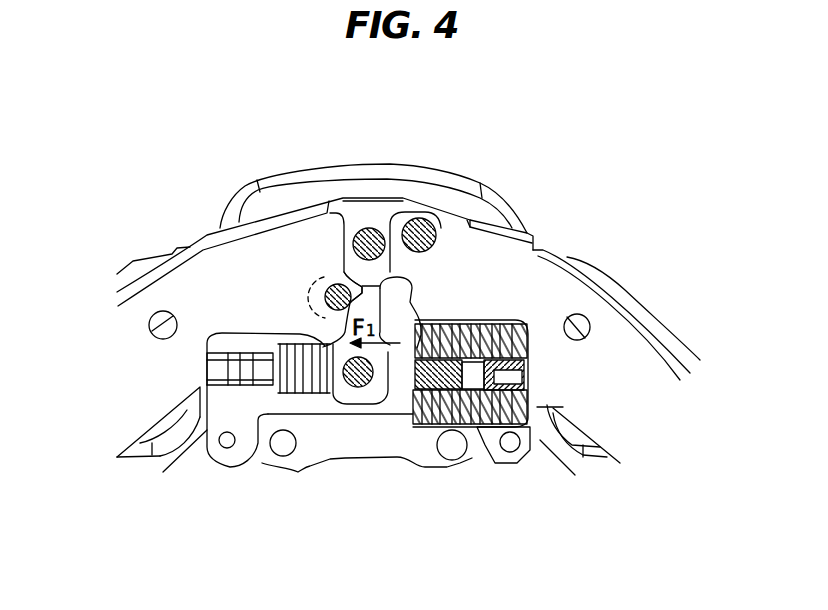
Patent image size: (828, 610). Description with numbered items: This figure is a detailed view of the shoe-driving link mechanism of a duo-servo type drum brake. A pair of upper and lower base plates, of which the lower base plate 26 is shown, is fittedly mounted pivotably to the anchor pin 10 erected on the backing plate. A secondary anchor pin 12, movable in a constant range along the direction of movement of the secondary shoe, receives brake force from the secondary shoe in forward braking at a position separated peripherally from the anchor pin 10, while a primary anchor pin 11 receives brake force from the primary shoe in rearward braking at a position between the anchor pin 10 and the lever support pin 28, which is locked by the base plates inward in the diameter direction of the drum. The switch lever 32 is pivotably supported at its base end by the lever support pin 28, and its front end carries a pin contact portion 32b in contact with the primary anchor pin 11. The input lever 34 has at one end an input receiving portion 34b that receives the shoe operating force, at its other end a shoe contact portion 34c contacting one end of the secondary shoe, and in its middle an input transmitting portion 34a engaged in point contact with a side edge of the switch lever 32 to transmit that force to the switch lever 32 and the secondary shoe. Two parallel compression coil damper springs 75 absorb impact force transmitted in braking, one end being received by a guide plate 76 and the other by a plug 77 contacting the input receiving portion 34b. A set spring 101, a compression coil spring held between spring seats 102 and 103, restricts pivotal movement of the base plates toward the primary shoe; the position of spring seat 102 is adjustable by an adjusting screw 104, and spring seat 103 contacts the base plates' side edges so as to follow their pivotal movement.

The anchor pin 10 is at (363, 228).
The primary anchor pin 11 is at (345, 333).
The secondary anchor pin 12 is at (430, 220).
The lower base plate 26 is at (380, 212).
The lever support pin 28 is at (366, 388).
The switch lever 32 is at (340, 333).
The pin contact portion 32b is at (330, 275).
The input lever 34 is at (412, 282).
The input transmitting portion 34a is at (380, 330).
The input receiving portion 34b is at (410, 385).
The shoe contact portion 34c is at (483, 222).
The damper spring 75 is at (509, 345).
The guide plate 76 is at (527, 365).
The plug 77 is at (440, 405).
The set spring 101 is at (350, 418).
The spring seat 102 is at (280, 380).
The spring seat 103 is at (373, 425).
The adjusting screw 104 is at (207, 453).